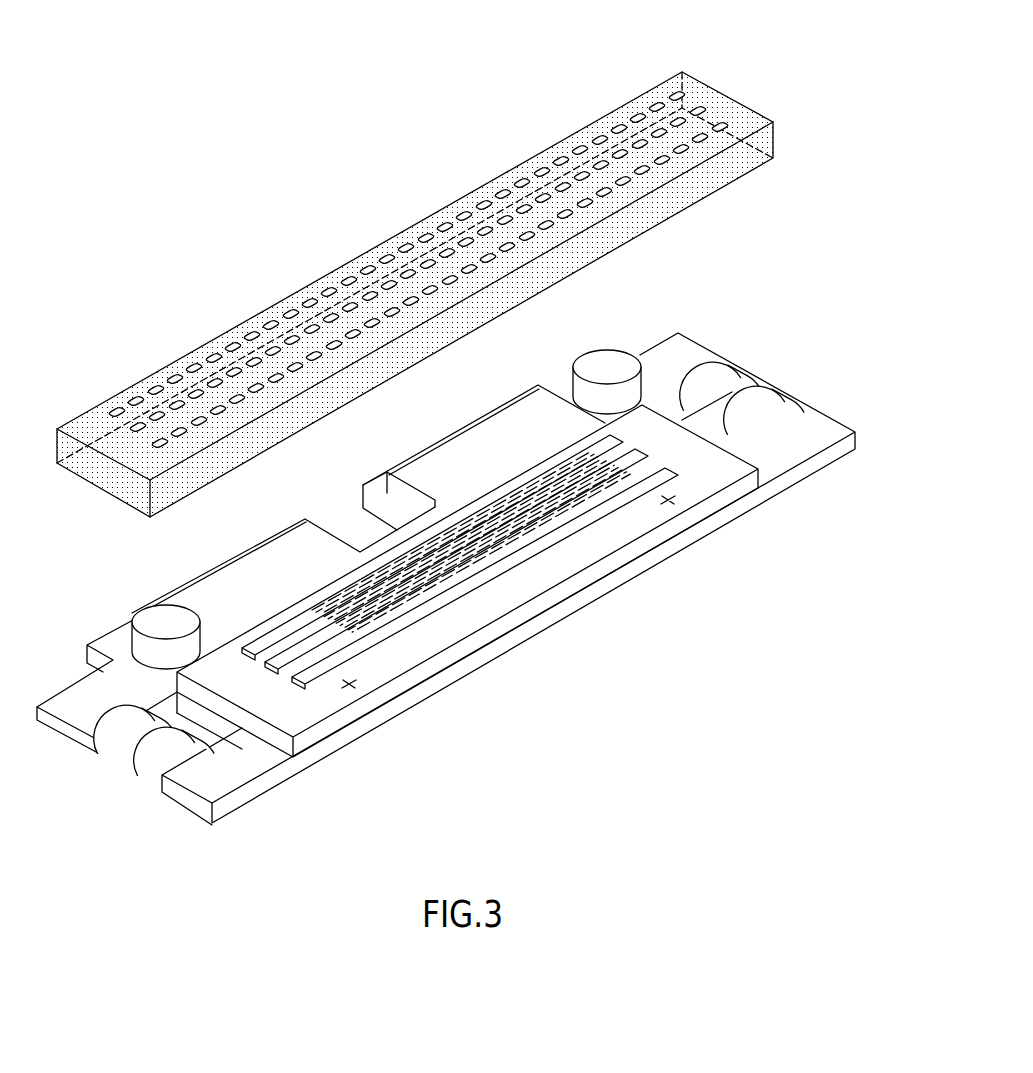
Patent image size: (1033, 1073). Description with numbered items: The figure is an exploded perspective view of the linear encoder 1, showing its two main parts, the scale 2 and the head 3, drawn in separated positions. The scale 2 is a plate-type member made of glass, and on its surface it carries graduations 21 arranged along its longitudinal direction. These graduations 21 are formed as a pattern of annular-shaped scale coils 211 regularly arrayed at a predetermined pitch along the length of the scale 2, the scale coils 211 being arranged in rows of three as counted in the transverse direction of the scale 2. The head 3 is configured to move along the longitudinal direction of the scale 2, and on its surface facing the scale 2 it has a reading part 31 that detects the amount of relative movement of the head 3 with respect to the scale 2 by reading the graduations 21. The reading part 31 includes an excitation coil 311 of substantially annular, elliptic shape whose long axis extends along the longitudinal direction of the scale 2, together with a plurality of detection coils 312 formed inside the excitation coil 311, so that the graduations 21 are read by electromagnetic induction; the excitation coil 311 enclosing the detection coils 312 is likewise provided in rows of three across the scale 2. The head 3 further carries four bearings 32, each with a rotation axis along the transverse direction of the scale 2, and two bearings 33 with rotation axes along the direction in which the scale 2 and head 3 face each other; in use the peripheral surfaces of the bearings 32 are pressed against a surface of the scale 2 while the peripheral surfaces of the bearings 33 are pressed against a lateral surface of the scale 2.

The linear encoder 1 is at (528, 105).
The scale 2 is at (696, 95).
The graduations 21 is at (705, 113).
The scale coils 211 is at (728, 124).
The head 3 is at (155, 592).
The reading part 31 is at (280, 617).
The excitation coil 311 is at (672, 465).
The detection coils 312 is at (488, 500).
The bearings 32 is at (152, 767).
The bearings 33 is at (148, 615).